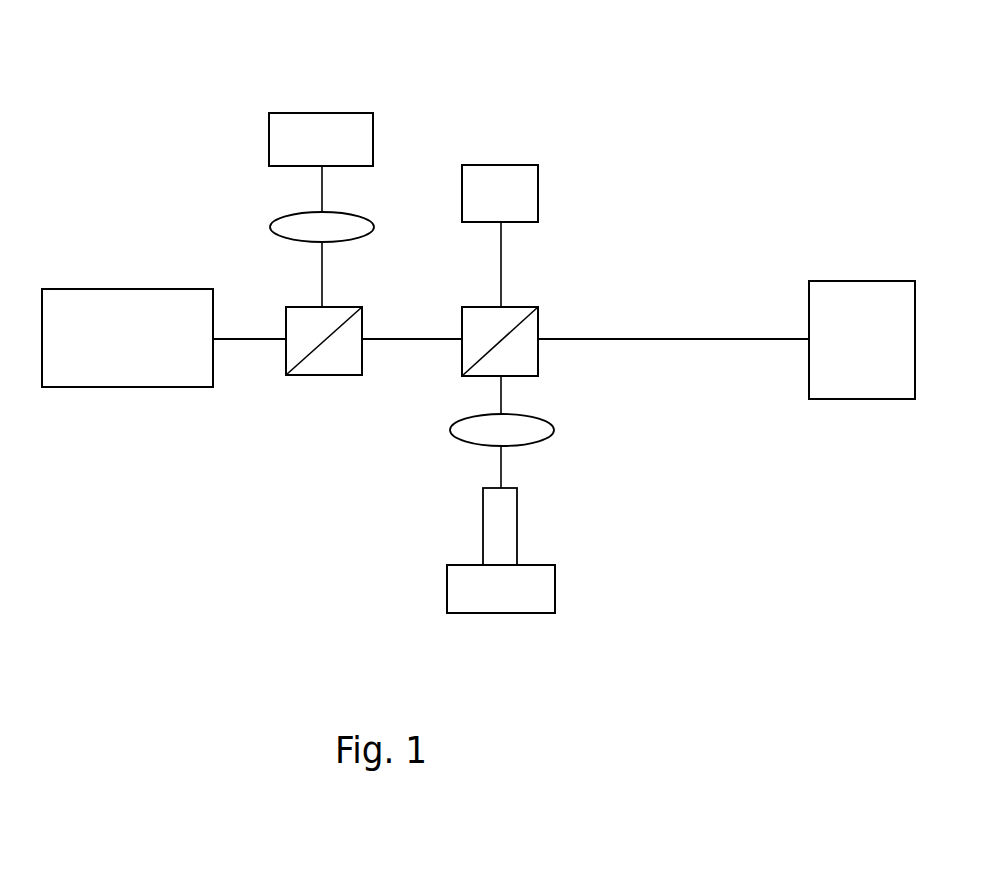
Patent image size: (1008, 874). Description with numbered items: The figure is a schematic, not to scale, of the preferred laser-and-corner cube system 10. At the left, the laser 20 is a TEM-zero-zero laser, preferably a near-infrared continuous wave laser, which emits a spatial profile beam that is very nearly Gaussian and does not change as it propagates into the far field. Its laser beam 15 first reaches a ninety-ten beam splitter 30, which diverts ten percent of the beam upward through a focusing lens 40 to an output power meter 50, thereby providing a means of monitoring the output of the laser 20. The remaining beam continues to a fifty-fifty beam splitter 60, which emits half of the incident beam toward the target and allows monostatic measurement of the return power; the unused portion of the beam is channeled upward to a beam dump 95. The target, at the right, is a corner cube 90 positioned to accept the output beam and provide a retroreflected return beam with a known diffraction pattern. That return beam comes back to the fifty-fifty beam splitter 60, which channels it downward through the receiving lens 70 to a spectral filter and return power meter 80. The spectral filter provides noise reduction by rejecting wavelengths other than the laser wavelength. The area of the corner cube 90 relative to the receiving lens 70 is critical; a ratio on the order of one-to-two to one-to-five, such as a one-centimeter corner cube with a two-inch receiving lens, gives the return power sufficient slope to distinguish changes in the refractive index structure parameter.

The laser-and-corner cube system 10 is at (631, 198).
The laser beam 15 is at (252, 340).
The laser 20 is at (88, 272).
The 90/10 beam splitter 30 is at (287, 298).
The focusing lens 40 is at (269, 212).
The output power meter 50 is at (261, 113).
The 50-50 beam splitter 60 is at (462, 357).
The receiving lens 70 is at (462, 447).
The spectral filter and return power meter 80 is at (470, 548).
The corner cube 90 is at (861, 272).
The beam dump 95 is at (539, 163).